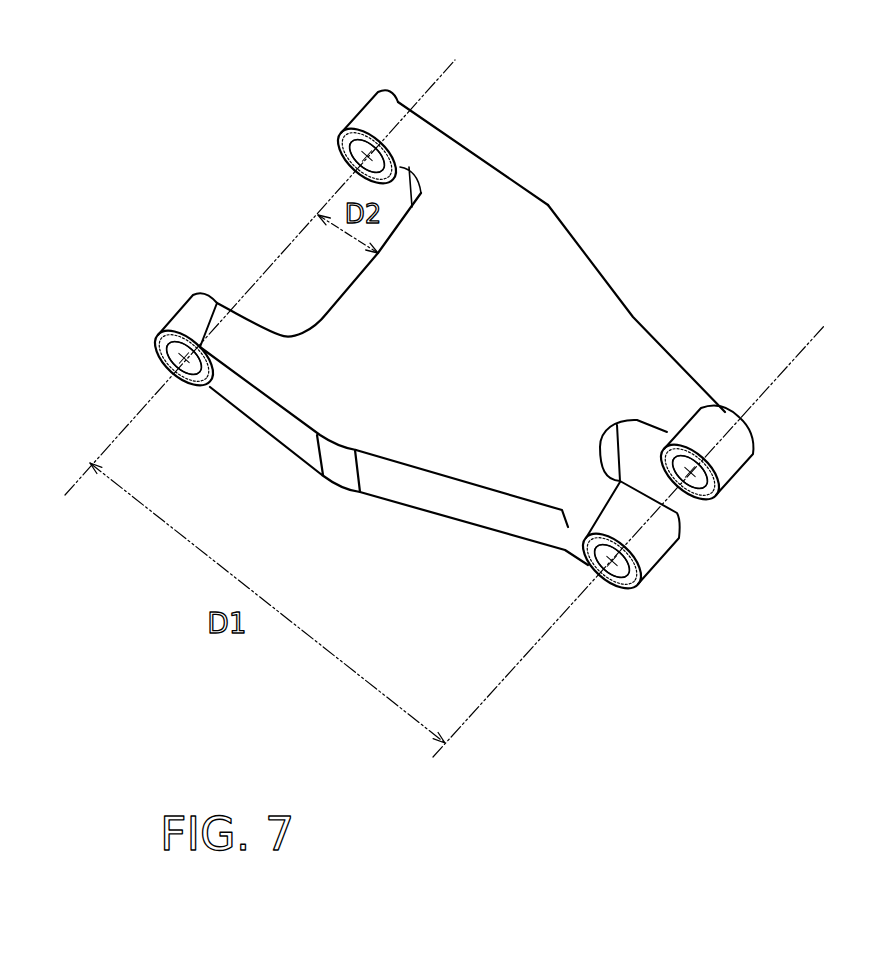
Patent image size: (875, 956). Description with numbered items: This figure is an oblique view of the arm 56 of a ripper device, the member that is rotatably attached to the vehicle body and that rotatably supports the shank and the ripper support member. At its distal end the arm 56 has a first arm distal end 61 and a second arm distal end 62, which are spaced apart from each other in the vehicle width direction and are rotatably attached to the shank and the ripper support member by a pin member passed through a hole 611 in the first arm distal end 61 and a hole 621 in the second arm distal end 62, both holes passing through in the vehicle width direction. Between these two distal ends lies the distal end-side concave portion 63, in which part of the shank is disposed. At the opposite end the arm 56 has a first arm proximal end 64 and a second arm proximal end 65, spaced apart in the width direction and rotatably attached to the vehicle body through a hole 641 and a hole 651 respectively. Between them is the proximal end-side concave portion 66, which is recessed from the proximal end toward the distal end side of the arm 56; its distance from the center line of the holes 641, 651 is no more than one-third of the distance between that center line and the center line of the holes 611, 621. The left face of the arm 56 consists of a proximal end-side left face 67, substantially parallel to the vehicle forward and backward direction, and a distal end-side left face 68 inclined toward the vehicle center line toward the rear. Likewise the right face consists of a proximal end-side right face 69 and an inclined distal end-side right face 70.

The arm 56 is at (607, 169).
The first arm distal end 61 is at (653, 560).
The hole 611 is at (600, 560).
The second arm distal end 62 is at (738, 463).
The hole 621 is at (692, 482).
The distal end-side concave portion 63 is at (640, 442).
The first arm proximal end 64 is at (183, 315).
The hole 641 is at (167, 360).
The second arm proximal end 65 is at (375, 105).
The hole 651 is at (347, 167).
The proximal end-side concave portion 66 is at (322, 312).
The proximal end-side left face 67 is at (250, 408).
The distal end-side left face 68 is at (442, 505).
The proximal end-side right face 69 is at (473, 140).
The distal end-side right face 70 is at (633, 317).